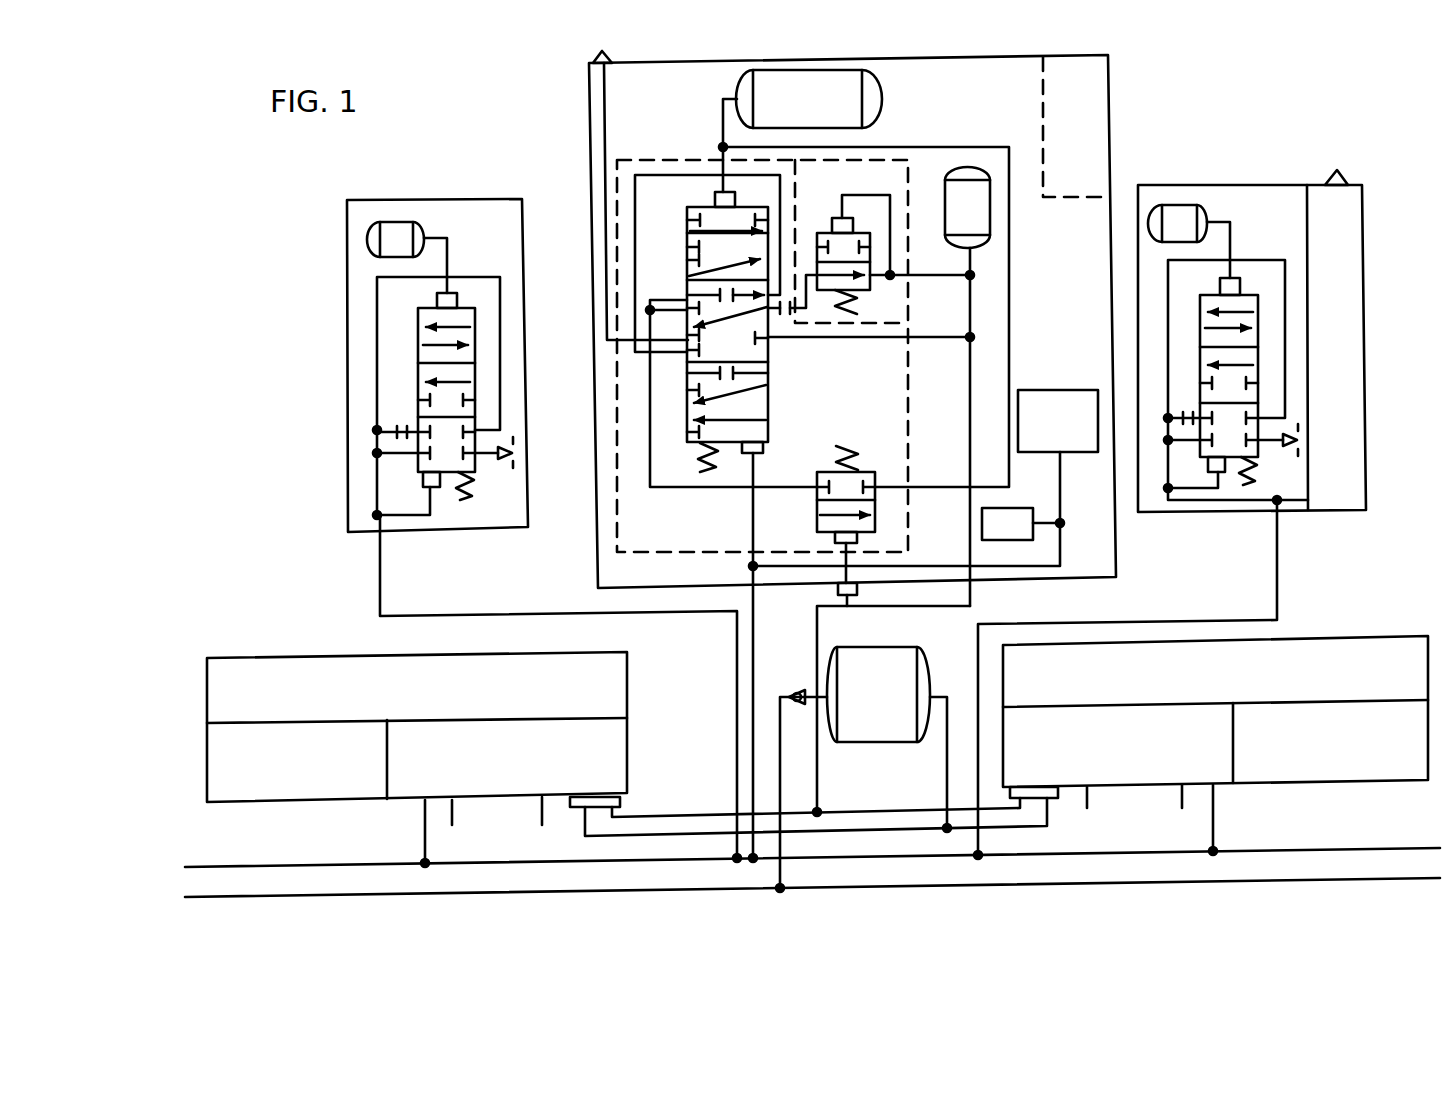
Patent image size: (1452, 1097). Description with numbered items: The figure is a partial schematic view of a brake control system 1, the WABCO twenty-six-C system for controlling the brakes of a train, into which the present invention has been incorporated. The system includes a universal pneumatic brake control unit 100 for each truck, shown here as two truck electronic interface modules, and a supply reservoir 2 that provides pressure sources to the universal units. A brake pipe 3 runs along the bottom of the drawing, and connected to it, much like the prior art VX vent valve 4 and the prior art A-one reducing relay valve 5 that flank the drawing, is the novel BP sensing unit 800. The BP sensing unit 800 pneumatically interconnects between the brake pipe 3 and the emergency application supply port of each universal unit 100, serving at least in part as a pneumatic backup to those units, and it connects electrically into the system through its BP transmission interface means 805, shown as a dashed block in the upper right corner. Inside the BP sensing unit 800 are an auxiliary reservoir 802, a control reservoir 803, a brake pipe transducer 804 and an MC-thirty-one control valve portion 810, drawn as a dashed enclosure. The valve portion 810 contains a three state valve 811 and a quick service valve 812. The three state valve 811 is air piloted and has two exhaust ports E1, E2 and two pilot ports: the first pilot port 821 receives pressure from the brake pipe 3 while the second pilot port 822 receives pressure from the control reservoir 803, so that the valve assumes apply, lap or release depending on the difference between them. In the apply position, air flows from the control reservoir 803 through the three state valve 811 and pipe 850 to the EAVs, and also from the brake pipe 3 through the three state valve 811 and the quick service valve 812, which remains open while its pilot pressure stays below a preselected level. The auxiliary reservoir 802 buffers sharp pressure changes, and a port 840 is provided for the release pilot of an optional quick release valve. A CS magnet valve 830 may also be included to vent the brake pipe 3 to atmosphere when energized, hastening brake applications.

The brake control system 1 is at (310, 546).
The supply reservoir 2 is at (927, 653).
The brake pipe 3 is at (1346, 850).
The VX vent valve 4 is at (347, 266).
The A-1 reducing relay valve 5 is at (1367, 248).
The universal pneumatic brake control unit 100 is at (293, 655).
The BP sensing unit 800 is at (1029, 55).
The auxiliary reservoir 802 is at (990, 215).
The control reservoir 803 is at (893, 86).
The brake pipe transducer 804 is at (982, 522).
The BP transmission interface means 805 is at (1110, 138).
The MC-31 control valve portion 810 is at (673, 157).
The three state valve 811 is at (770, 398).
The quick service valve 812 is at (832, 220).
The first pilot port 821 is at (748, 455).
The second pilot port 822 is at (715, 198).
The CS magnet valve 830 is at (1060, 390).
The port 840 is at (891, 699).
The pipe 850 is at (893, 337).
The exhaust port E1 is at (593, 59).
The exhaust port E2 is at (692, 325).